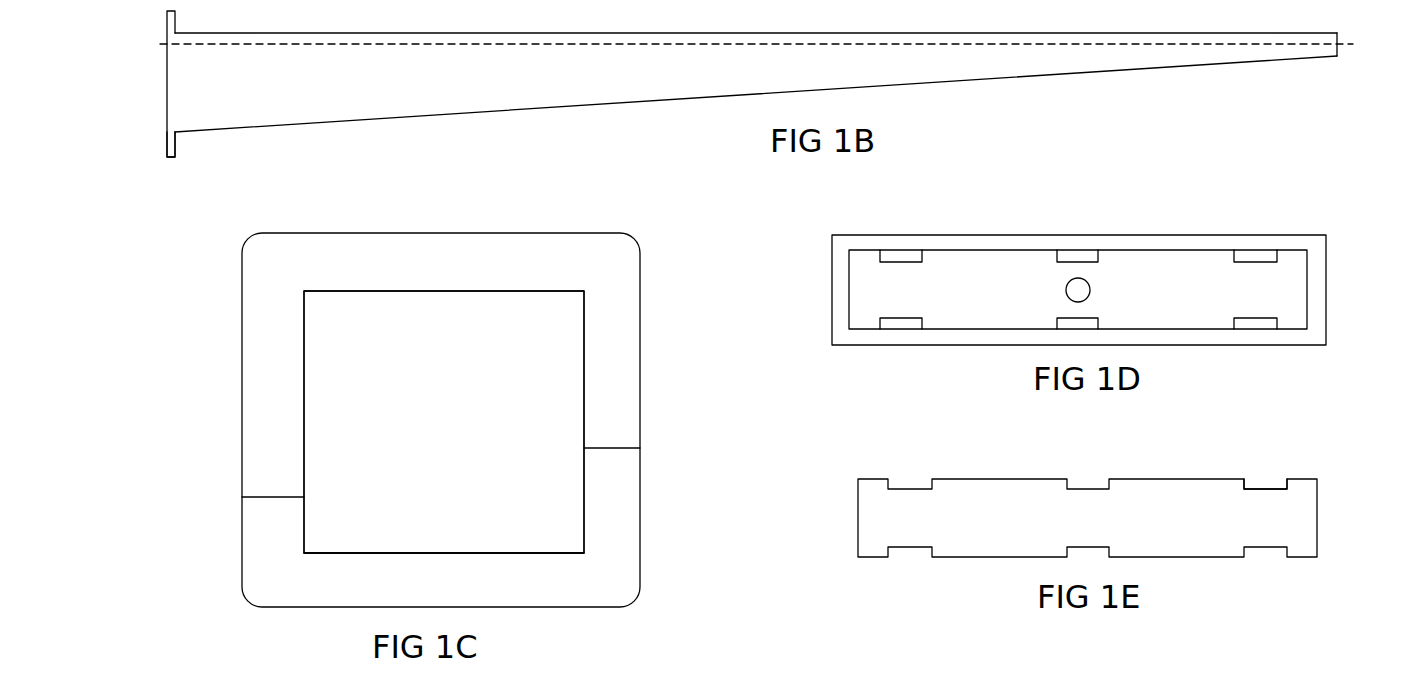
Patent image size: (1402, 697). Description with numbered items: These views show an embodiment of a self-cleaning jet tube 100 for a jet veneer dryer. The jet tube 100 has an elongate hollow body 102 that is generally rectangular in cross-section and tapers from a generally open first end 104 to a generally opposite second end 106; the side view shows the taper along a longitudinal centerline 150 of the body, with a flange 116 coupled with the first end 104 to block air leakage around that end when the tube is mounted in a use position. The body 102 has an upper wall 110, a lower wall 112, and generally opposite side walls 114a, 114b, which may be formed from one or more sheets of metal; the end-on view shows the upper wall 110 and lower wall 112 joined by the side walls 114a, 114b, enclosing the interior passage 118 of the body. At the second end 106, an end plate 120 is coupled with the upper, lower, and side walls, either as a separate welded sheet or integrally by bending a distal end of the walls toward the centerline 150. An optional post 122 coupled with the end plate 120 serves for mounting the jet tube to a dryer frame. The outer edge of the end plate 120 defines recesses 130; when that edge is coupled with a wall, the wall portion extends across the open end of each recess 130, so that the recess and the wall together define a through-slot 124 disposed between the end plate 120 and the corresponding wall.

In FIG. 1B, the self-cleaning jet tube 100 is at (756, 99).
In FIG. 1B, the elongate hollow body 102 is at (758, 89).
In FIG. 1D, the elongate hollow body 102 is at (1304, 246).
In FIG. 1B, the first end 104 is at (185, 146).
In FIG. 1B, the second end 106 is at (1337, 62).
In FIG. 1B, the upper wall 110 is at (867, 33).
In FIG. 1C, the upper wall 110 is at (460, 292).
In FIG. 1B, the lower wall 112 is at (558, 107).
In FIG. 1C, the lower wall 112 is at (481, 554).
In FIG. 1C, the side wall 114a is at (262, 497).
In FIG. 1C, the side wall 114b is at (640, 448).
In FIG. 1B, the flange 116 is at (175, 20).
In FIG. 1C, the flange 116 is at (615, 268).
In FIG. 1C, the active area 118 is at (560, 394).
In FIG. 1D, the end plate 120 is at (1143, 277).
In FIG. 1E, the end plate 120 is at (985, 513).
In FIG. 1D, the post 122 is at (1066, 289).
In FIG. 1D, the through-slot 124 is at (915, 257).
In FIG. 1E, the recess 130 is at (1245, 487).
In FIG. 1B, the longitudinal centerline 150 is at (470, 43).